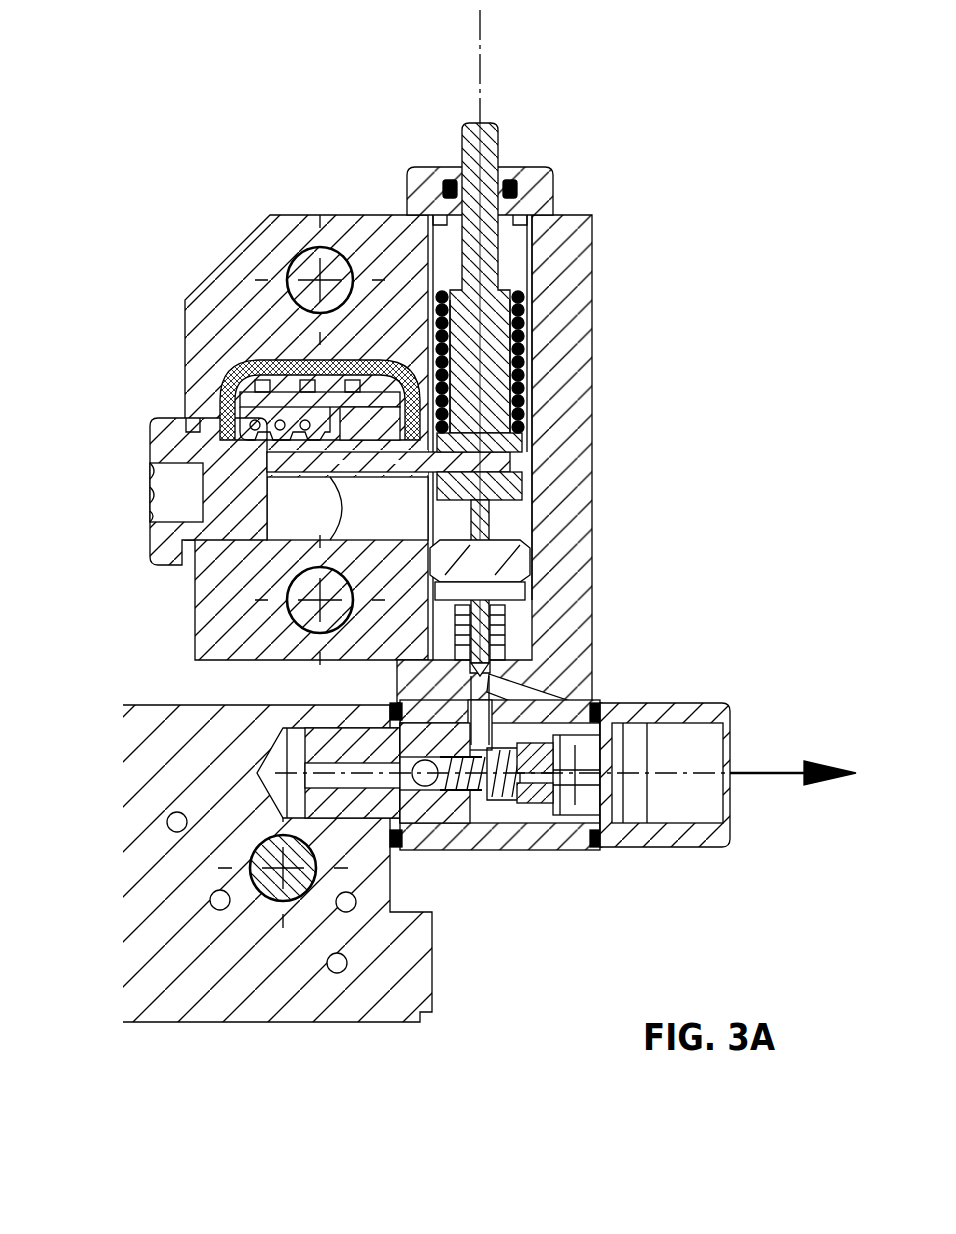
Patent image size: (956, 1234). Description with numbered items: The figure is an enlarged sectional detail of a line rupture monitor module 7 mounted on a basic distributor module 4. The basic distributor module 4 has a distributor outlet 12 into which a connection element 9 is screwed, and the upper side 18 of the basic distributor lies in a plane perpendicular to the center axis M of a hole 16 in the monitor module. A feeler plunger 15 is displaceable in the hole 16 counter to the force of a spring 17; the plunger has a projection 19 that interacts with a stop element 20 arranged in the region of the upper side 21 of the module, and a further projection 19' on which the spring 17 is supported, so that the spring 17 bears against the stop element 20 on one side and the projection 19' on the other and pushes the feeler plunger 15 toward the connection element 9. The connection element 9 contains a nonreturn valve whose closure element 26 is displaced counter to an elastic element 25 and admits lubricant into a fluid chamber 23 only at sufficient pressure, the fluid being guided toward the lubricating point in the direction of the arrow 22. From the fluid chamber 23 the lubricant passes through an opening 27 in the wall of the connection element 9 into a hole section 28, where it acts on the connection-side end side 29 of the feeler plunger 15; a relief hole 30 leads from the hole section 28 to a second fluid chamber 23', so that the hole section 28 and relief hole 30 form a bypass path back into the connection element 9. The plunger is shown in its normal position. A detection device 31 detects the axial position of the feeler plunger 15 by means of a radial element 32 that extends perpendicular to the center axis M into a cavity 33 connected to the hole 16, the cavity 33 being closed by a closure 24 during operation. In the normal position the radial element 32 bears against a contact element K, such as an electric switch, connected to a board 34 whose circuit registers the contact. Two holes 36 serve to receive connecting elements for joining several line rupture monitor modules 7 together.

The basic distributor module 4 is at (229, 860).
The line rupture monitor module 7 is at (567, 597).
The connection element 9 is at (676, 840).
The distributor outlet 12 is at (297, 790).
The feeler plunger 15 is at (542, 383).
The hole 16 is at (538, 370).
The spring 17 is at (512, 330).
The upper side 18 is at (160, 704).
The projection 19 is at (549, 320).
The further projection 19' is at (596, 397).
The stop element 20 is at (540, 187).
The upper side 21 is at (304, 215).
The arrow 22 is at (760, 774).
The fluid chamber 23 is at (500, 832).
The fluid chamber 23' is at (560, 829).
The closure 24 is at (171, 452).
The elastic element 25 is at (462, 790).
The closure element 26 is at (432, 787).
The opening 27 is at (623, 725).
The hole section 28 is at (560, 693).
The connection-side end side 29 is at (545, 665).
The relief hole 30 is at (560, 700).
The detection device 31 is at (260, 349).
The radial element 32 is at (297, 467).
The cavity 33 is at (387, 493).
The board 34 is at (264, 330).
The holes 36 is at (298, 257).
The contact element K is at (372, 385).
The center axis M is at (481, 48).